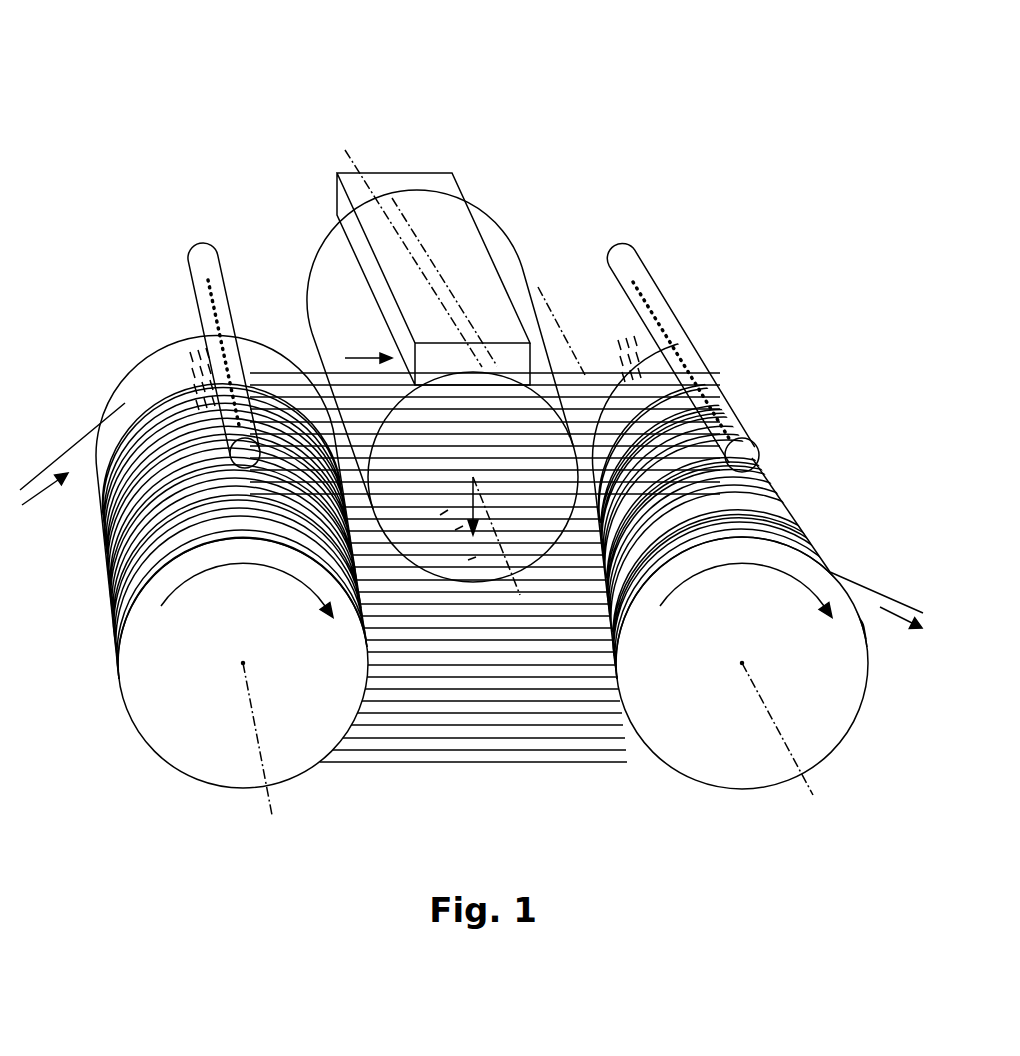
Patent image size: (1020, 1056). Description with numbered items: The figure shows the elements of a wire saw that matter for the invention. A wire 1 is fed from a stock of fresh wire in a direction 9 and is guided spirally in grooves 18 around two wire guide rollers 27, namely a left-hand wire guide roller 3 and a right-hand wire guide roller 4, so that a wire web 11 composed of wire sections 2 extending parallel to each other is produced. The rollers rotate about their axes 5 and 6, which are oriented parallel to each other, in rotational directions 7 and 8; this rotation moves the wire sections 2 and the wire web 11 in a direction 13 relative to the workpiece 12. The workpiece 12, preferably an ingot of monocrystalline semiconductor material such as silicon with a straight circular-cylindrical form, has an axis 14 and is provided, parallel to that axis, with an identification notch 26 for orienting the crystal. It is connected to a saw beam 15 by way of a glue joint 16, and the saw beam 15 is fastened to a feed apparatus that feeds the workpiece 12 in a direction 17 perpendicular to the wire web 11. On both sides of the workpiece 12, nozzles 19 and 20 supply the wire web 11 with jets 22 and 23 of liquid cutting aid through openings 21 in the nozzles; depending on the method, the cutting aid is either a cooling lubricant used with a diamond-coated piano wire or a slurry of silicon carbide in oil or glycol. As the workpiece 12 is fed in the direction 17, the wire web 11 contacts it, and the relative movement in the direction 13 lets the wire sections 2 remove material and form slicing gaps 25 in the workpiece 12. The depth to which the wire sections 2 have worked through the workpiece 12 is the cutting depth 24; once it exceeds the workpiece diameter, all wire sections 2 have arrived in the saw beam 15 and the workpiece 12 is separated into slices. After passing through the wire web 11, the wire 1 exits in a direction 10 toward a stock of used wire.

The wire 1 is at (62, 452).
The wire sections 2 is at (270, 370).
The left-hand wire guide roller 3 is at (188, 728).
The right-hand wire guide roller 4 is at (727, 753).
The axis 5 is at (268, 795).
The axis 6 is at (807, 773).
The rotational direction 7 is at (233, 567).
The rotational direction 8 is at (720, 567).
The direction 9 is at (36, 508).
The direction 10 is at (896, 640).
The wire web 11 is at (312, 388).
The workpiece 12 is at (328, 248).
The direction 13 is at (350, 355).
The axis 14 is at (345, 150).
The saw beam 15 is at (428, 185).
The glue joint 16 is at (490, 345).
The direction 17 is at (440, 515).
The grooves 18 is at (108, 592).
The nozzle 19 is at (195, 268).
The nozzle 20 is at (628, 275).
The openings 21 is at (210, 300).
The jet 22 is at (185, 352).
The jet 23 is at (613, 342).
The cutting depth 24 is at (455, 530).
The slicing gaps 25 is at (468, 560).
The identification notch 26 is at (432, 247).
The wire guide rollers 27 is at (140, 385).